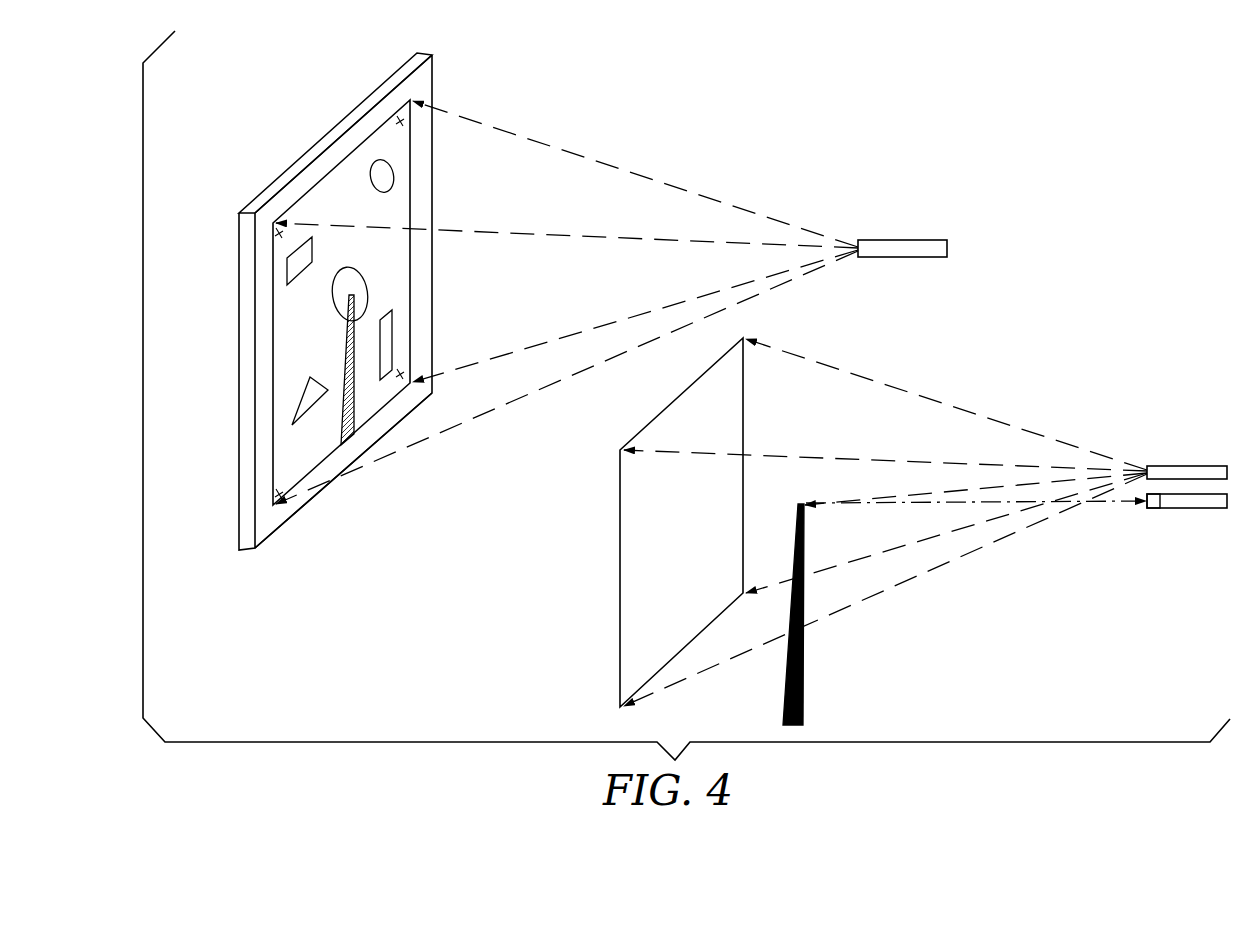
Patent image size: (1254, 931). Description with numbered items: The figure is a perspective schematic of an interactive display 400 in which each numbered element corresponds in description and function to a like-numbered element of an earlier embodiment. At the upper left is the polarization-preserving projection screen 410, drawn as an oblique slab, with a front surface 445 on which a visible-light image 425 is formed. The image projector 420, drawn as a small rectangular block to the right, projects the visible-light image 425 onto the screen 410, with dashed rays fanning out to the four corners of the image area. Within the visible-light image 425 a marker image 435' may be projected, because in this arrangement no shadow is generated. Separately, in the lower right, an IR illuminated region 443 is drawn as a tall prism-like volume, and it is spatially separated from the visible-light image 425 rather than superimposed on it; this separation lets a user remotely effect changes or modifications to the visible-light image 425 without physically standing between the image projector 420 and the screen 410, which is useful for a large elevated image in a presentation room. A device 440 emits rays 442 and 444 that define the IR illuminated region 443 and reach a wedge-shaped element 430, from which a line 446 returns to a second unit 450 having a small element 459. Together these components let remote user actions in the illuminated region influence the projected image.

The interactive display 400 is at (247, 116).
The projection screen 410 is at (382, 90).
The front surface of plate 445 is at (345, 150).
The visible-light image 425 is at (313, 207).
The marker image 435' is at (277, 355).
The image projector 420 is at (908, 244).
The IR illuminated region 443 is at (620, 568).
The wedge element 430 is at (802, 650).
The imaging device 440 is at (1181, 466).
The ray to prism apex 442 is at (988, 413).
The ray to wedge 444 is at (1043, 483).
The reflected ray 446 is at (1108, 503).
The sensor unit 450 is at (1205, 508).
The sensor element 459 is at (1152, 508).